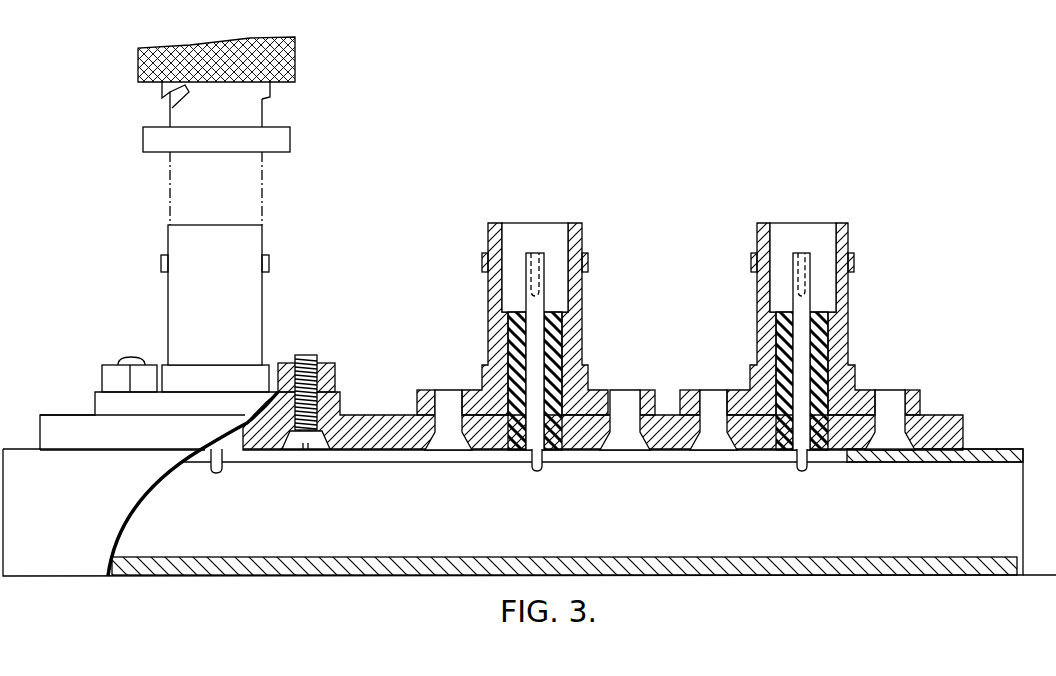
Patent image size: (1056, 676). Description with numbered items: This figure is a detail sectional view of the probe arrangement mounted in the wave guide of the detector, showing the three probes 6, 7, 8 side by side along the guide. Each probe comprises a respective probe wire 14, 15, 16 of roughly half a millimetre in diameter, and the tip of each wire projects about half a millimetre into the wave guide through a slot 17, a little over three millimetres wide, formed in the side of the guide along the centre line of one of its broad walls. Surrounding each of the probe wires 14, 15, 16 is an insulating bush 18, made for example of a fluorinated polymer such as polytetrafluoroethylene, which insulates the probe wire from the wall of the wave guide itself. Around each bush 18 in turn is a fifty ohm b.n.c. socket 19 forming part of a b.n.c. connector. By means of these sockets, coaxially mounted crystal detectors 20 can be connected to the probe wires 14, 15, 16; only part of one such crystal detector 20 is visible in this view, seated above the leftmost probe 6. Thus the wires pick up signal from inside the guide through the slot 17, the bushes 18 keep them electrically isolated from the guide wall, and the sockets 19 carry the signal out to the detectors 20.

The probe 6 is at (262, 317).
The probe 7 is at (488, 316).
The probe 8 is at (757, 316).
The probe wire 14 is at (210, 471).
The probe wire 15 is at (532, 468).
The probe wire 16 is at (797, 468).
The slot 17 is at (840, 463).
The insulating bush 18 is at (555, 336).
The b.n.c. socket 19 is at (255, 241).
The crystal detector 20 is at (268, 106).